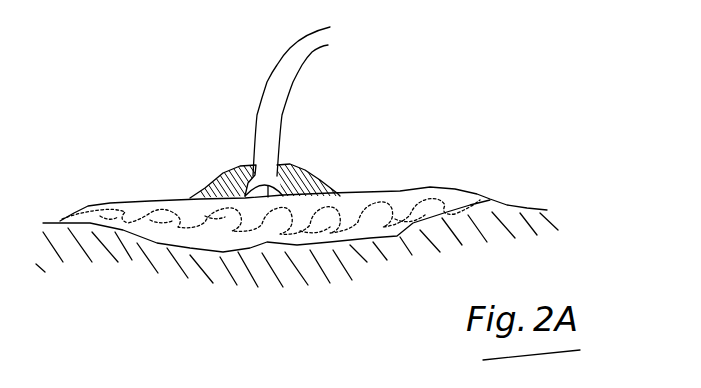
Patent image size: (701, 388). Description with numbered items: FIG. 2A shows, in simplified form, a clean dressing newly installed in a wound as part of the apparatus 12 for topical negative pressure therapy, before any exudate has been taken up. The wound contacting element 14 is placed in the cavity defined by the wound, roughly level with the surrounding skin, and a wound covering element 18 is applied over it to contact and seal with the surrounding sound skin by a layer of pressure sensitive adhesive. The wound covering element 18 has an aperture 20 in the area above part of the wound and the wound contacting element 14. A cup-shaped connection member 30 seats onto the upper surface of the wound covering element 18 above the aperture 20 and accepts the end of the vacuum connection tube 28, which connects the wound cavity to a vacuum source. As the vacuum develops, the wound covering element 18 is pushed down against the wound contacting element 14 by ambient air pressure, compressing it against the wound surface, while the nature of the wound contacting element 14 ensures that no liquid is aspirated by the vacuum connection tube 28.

The apparatus 12 is at (483, 65).
The wound contacting element 14 is at (355, 215).
The wound covering element 18 is at (142, 202).
The aperture 20 is at (253, 164).
The vacuum connection tube 28 is at (312, 57).
The cup-shaped connection member 30 is at (298, 165).